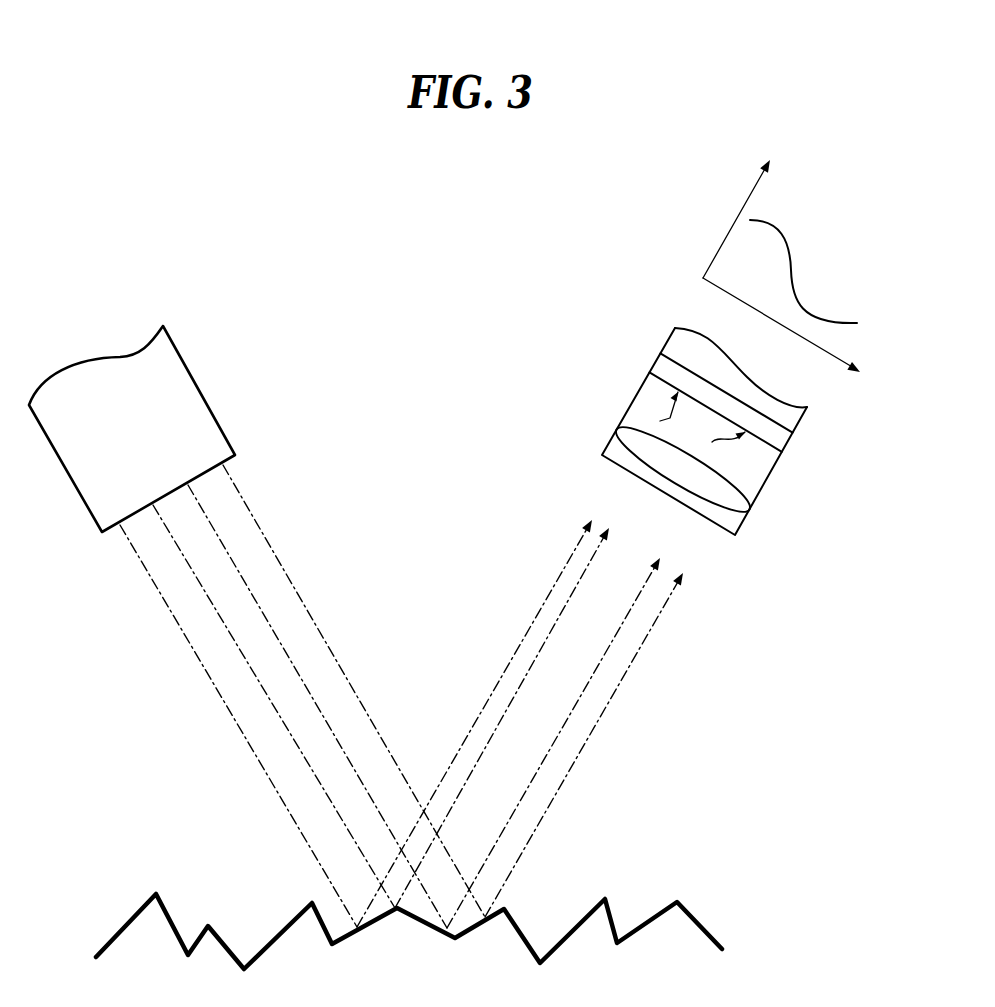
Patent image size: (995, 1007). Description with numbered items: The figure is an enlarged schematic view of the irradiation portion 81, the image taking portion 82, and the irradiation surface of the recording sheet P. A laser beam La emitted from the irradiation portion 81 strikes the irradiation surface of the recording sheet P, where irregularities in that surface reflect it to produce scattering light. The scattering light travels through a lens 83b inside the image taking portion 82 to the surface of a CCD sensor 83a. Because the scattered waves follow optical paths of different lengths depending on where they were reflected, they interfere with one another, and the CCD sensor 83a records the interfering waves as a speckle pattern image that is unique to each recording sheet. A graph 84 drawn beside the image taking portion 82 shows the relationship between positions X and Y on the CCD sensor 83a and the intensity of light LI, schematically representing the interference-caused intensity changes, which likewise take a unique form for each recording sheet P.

The irradiation portion 81 is at (177, 420).
The image taking portion 82 is at (694, 430).
The CCD sensor 83a is at (773, 417).
The lens 83b is at (640, 447).
The graph 84 is at (790, 265).
The recording sheet P is at (613, 913).
The laser beam La is at (210, 685).